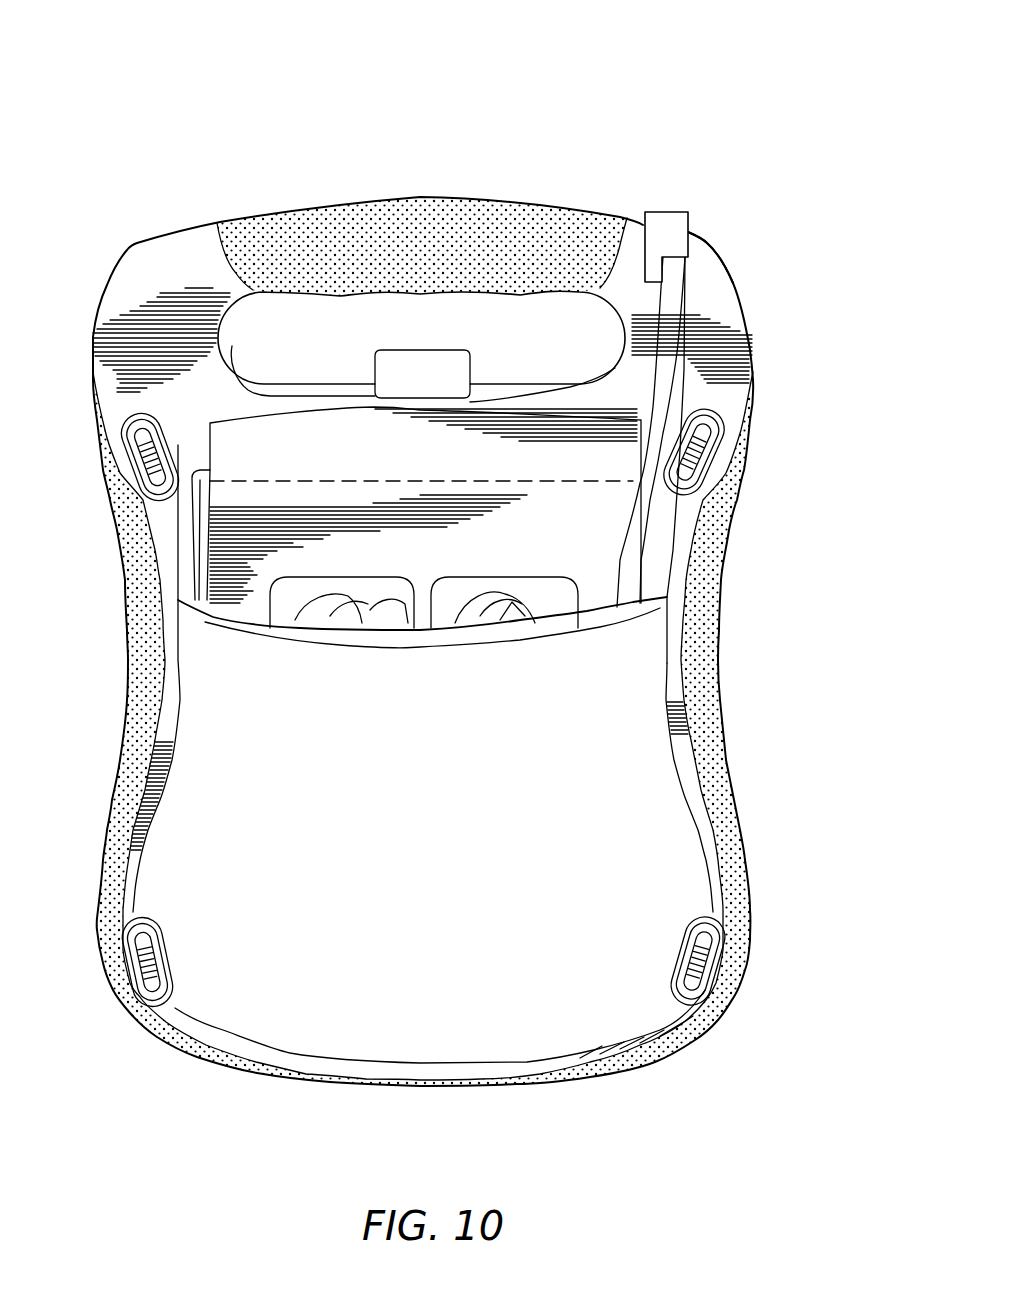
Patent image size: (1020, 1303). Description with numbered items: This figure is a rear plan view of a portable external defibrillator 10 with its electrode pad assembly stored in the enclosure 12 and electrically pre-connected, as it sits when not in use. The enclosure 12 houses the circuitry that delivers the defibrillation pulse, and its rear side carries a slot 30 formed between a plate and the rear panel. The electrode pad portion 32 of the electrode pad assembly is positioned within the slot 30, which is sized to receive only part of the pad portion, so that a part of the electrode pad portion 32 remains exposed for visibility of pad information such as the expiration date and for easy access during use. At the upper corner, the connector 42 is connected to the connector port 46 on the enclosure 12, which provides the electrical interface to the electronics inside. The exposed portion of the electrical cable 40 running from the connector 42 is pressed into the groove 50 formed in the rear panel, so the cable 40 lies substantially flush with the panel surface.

The portable external defibrillator 10 is at (570, 124).
The enclosure 12 is at (168, 241).
The slot 30 is at (598, 588).
The electrode pad portion 32 is at (223, 443).
The electrical cable 40 is at (685, 288).
The connector 42 is at (665, 212).
The connector port 46 is at (688, 250).
The groove 50 is at (673, 403).